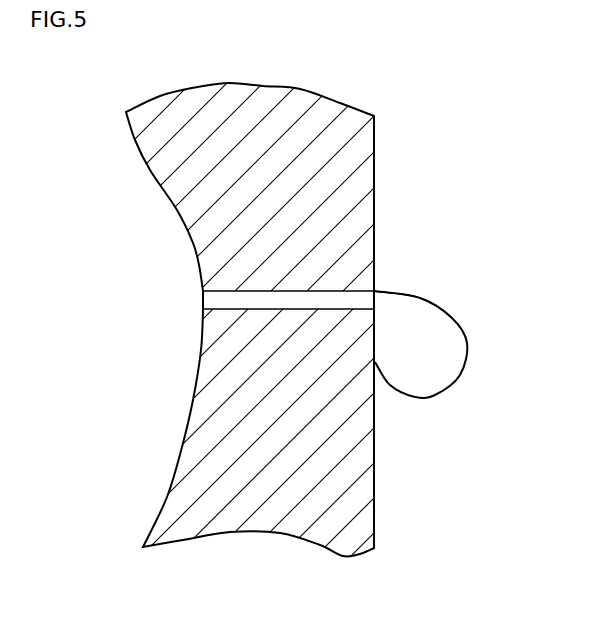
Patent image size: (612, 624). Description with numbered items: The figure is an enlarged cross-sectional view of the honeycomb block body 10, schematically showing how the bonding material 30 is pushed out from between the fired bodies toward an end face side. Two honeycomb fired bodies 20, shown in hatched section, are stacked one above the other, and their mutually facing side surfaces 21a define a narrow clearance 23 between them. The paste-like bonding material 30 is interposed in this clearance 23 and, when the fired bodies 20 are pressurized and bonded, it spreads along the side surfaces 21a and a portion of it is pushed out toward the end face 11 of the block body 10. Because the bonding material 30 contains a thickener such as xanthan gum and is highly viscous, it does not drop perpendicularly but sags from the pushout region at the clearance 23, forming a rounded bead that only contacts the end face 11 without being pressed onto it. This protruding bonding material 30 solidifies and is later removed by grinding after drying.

The honeycomb block body 10 is at (306, 312).
The end face 11 is at (374, 173).
The honeycomb fired body 20 is at (362, 223).
The side surface 21a is at (235, 309).
The clearance 23 is at (377, 311).
The bonding material 30 is at (457, 350).